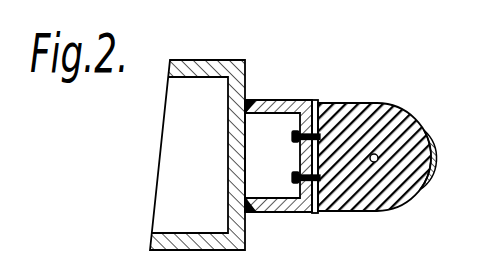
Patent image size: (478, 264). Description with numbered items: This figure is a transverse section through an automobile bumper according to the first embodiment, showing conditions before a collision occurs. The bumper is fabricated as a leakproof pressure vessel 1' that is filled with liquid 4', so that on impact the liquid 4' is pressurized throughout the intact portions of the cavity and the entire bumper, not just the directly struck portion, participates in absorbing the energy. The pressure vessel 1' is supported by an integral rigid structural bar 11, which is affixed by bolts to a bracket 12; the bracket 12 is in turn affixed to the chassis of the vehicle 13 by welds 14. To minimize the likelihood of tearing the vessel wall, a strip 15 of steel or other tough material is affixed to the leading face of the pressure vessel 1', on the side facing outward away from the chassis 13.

The chassis of the vehicle 13 is at (210, 60).
The welds 14 is at (250, 99).
The bracket 12 is at (276, 106).
The rigid structural bar 11 is at (317, 215).
The pressure vessel 1' is at (374, 134).
The liquid 4' is at (382, 208).
The strip 15 is at (433, 128).